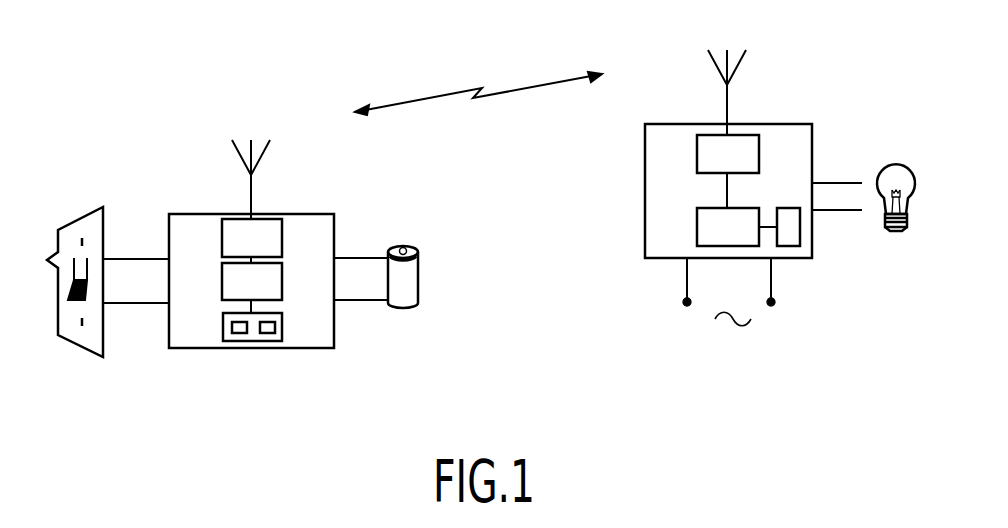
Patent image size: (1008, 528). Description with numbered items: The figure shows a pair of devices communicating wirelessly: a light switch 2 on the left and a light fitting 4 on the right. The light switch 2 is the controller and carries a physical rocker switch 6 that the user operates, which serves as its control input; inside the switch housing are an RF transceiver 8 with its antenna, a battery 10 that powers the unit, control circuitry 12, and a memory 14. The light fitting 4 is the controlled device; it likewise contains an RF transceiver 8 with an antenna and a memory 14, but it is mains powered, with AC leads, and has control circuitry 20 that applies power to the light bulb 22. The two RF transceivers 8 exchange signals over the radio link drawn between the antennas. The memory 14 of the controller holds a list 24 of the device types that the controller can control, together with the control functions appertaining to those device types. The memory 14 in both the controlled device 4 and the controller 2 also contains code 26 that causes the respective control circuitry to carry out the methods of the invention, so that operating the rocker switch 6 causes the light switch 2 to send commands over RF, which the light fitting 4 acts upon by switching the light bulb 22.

The light switch 2 is at (99, 182).
The light fitting 4 is at (826, 125).
The rocker switch 6 is at (83, 357).
The RF transceiver 8 is at (272, 218).
The battery 10 is at (418, 257).
The control circuitry 12 is at (283, 283).
The memory 14 is at (257, 341).
The control circuitry 20 is at (697, 240).
The light bulb 22 is at (896, 232).
The list of device types 24 is at (235, 338).
The code 26 is at (278, 329).